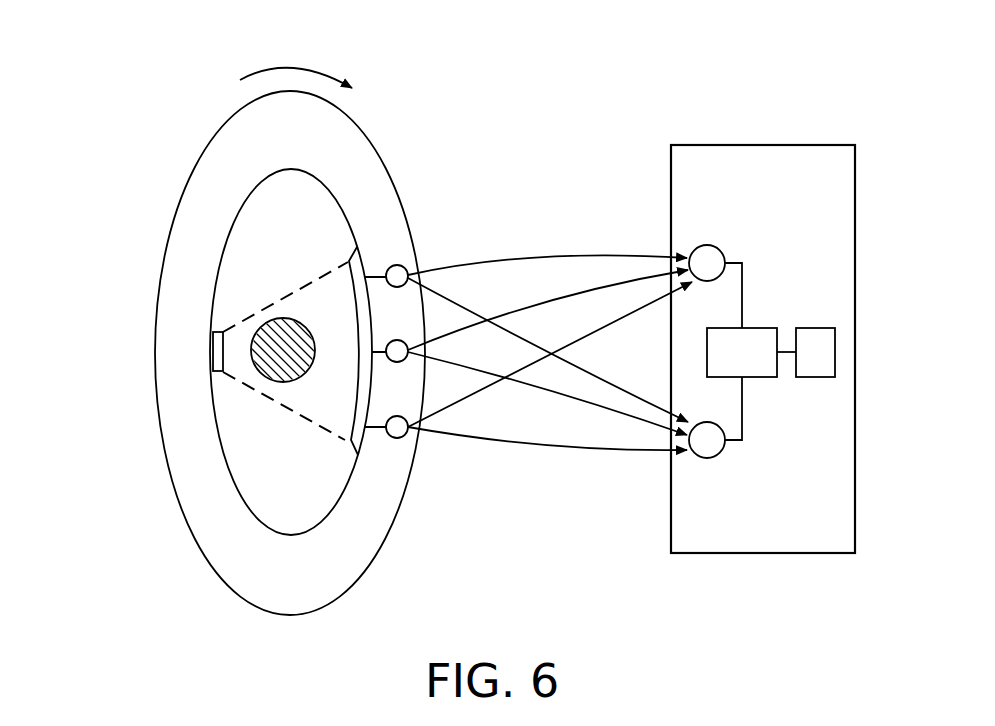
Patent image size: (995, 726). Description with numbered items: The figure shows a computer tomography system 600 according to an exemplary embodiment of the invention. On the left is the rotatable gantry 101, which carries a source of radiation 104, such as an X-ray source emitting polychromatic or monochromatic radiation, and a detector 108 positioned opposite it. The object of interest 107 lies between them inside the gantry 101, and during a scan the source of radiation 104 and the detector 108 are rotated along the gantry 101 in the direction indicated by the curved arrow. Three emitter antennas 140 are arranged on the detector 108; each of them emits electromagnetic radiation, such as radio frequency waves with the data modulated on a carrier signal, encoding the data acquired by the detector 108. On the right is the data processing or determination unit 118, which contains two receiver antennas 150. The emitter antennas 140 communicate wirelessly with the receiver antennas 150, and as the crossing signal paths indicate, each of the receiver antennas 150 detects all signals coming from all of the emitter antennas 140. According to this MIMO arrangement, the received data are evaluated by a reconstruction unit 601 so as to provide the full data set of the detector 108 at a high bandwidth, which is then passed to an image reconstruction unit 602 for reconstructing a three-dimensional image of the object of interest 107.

The computer tomography system 600 is at (601, 89).
The gantry 101 is at (349, 159).
The source of radiation 104 is at (213, 350).
The object of interest 107 is at (283, 365).
The detector 108 is at (357, 440).
The emitter antennas 140 is at (399, 348).
The receiver antennas 150 is at (703, 254).
The data processing or determination unit 118 is at (779, 141).
The reconstruction unit 601 is at (747, 337).
The image reconstruction unit 602 is at (825, 356).